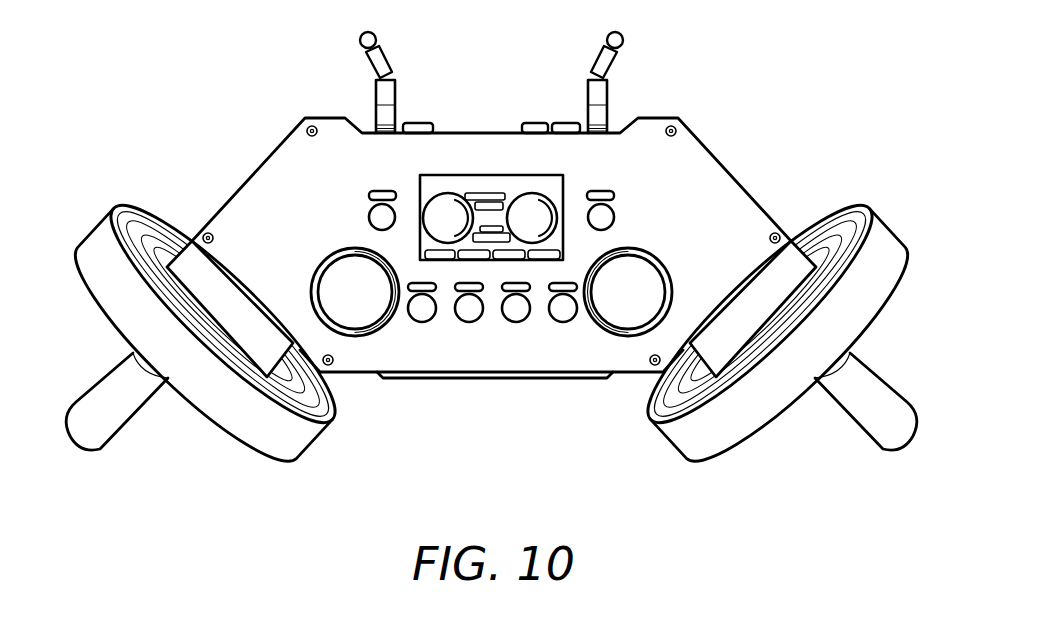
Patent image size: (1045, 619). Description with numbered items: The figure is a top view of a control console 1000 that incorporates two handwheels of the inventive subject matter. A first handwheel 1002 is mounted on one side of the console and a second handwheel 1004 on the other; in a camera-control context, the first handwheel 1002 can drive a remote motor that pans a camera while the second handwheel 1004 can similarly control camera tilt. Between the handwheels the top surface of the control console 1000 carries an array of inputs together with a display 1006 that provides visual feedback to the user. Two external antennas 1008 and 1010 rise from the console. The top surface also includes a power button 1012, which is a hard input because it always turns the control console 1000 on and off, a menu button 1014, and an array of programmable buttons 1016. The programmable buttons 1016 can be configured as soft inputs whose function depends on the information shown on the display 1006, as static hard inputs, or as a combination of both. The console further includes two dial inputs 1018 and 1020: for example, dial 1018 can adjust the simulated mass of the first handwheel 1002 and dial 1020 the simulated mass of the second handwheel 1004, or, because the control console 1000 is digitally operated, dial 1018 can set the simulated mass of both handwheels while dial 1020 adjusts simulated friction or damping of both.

The control console 1000 is at (181, 64).
The first handwheel 1002 is at (217, 410).
The second handwheel 1004 is at (766, 410).
The display 1006 is at (502, 180).
The external antenna 1008 is at (372, 62).
The external antenna 1010 is at (611, 62).
The power button 1012 is at (378, 217).
The menu button 1014 is at (607, 217).
The programmable buttons 1016 is at (426, 313).
The dial input 1018 is at (368, 317).
The dial input 1020 is at (610, 317).